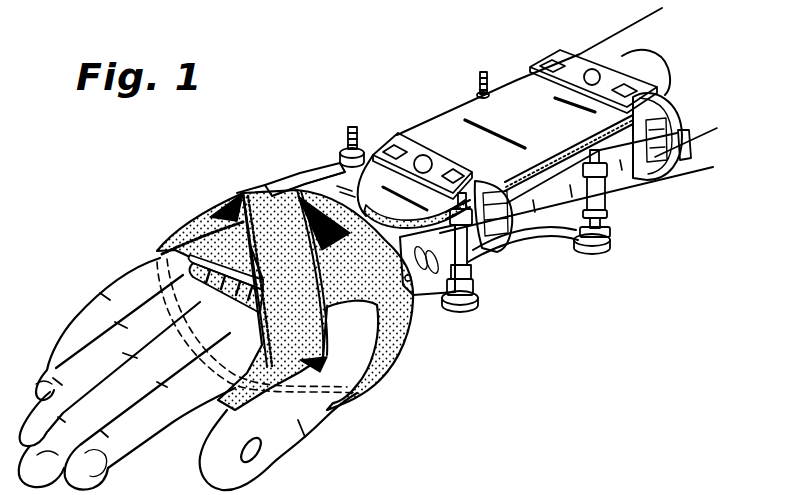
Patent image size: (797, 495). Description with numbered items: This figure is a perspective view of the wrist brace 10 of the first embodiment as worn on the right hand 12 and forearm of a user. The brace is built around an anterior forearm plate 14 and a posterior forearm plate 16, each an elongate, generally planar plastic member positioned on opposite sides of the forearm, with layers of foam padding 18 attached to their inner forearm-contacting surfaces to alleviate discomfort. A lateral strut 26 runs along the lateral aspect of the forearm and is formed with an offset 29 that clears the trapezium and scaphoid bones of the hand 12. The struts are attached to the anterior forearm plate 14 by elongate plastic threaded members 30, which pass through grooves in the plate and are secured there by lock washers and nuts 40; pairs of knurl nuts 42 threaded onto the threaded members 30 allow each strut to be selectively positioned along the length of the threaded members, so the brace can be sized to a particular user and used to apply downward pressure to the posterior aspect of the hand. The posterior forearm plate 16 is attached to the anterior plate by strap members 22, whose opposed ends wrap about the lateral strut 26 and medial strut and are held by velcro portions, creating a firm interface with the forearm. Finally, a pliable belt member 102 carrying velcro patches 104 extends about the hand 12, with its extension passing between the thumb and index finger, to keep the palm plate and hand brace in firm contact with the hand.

The wrist brace 10 is at (305, 106).
The hand 12 is at (326, 428).
The anterior forearm plate 14 is at (582, 250).
The posterior forearm plate 16 is at (652, 68).
The foam padding 18 is at (667, 97).
The strap members 22 is at (410, 135).
The lateral strut 26 is at (690, 138).
The offset 29 is at (482, 264).
The threaded members 30 is at (354, 126).
The nuts 40 is at (614, 238).
The knurl nuts 42 is at (345, 167).
The belt member 102 is at (410, 350).
The velcro patches 104 is at (220, 207).